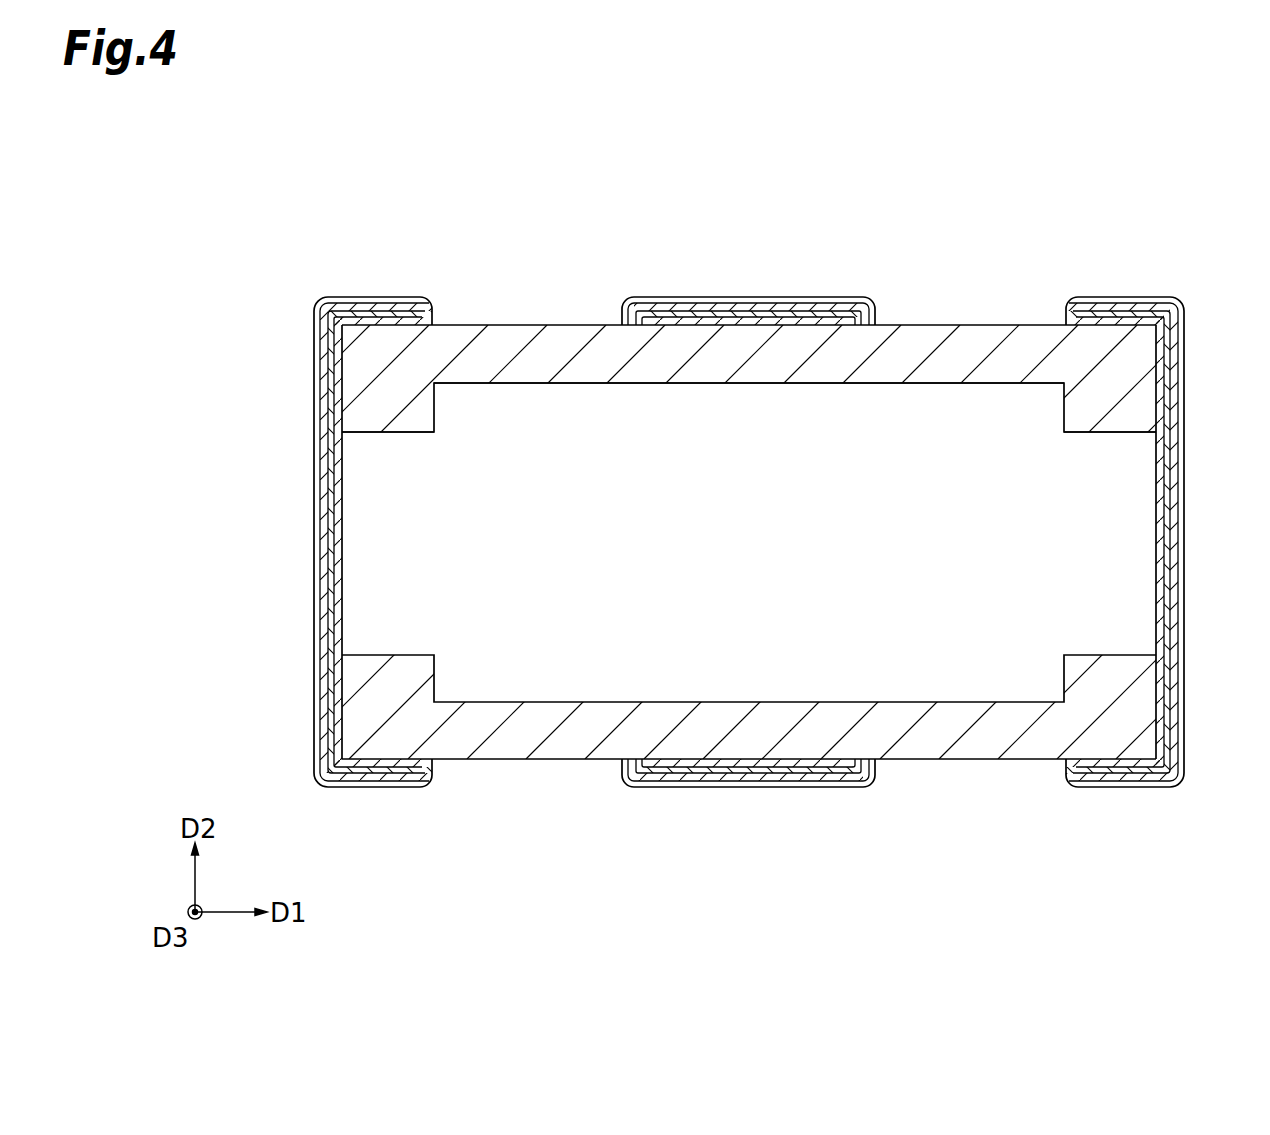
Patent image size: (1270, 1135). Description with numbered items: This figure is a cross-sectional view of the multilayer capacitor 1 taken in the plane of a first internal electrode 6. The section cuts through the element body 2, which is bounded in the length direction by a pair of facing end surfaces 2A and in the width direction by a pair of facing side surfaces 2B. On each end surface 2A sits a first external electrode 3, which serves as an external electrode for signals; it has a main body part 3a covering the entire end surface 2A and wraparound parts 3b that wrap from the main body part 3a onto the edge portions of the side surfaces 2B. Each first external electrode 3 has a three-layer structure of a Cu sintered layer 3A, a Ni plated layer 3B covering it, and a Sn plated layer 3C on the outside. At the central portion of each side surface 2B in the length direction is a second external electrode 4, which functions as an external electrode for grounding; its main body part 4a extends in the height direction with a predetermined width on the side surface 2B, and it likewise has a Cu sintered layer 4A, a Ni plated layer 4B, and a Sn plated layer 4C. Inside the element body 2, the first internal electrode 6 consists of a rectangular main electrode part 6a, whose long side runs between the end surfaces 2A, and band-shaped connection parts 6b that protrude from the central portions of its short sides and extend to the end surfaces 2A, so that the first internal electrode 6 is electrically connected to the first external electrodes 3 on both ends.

The multilayer capacitor 1 is at (310, 172).
The element body 2 is at (494, 307).
The end surface 2A is at (340, 605).
The side surface 2B is at (566, 323).
The first external electrode 3 is at (292, 520).
The main body part 3a is at (330, 550).
The wraparound part 3b is at (378, 298).
The Cu sintered layer 3A is at (334, 655).
The Ni plated layer 3B is at (326, 688).
The Sn plated layer 3C is at (316, 716).
The second external electrode 4 is at (626, 282).
The main body part 4a is at (668, 308).
The Cu sintered layer 4A is at (735, 318).
The Ni plated layer 4B is at (790, 310).
The Sn plated layer 4C is at (835, 303).
The first internal electrode 6 is at (893, 365).
The main electrode part 6a is at (890, 625).
The connection part 6b is at (385, 490).